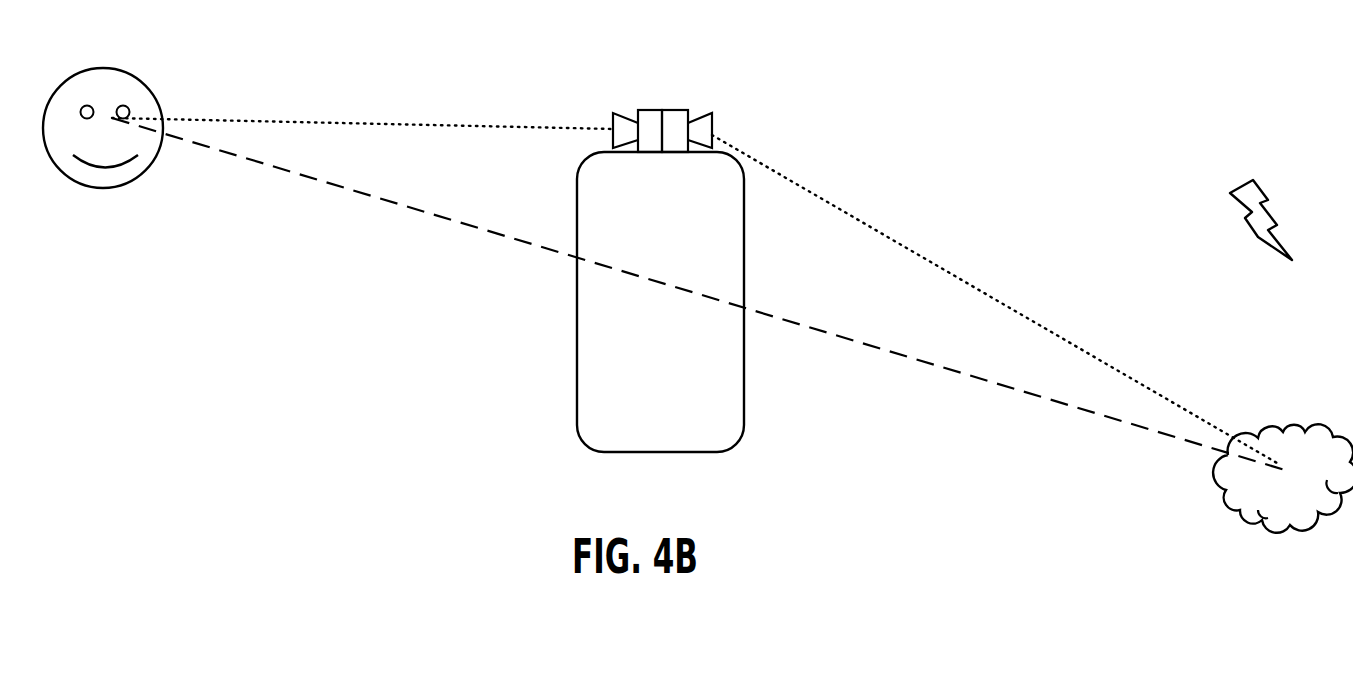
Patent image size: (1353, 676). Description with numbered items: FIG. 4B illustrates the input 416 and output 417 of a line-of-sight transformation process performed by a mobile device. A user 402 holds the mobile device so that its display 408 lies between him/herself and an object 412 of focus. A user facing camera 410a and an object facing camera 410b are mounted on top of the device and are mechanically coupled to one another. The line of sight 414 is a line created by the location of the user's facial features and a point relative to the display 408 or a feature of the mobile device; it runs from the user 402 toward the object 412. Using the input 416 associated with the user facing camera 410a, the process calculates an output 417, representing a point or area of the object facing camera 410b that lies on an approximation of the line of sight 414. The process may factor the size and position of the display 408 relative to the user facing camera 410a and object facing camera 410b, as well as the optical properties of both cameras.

The user 402 is at (80, 187).
The display 408 is at (632, 447).
The user facing camera 410a is at (648, 115).
The object facing camera 410b is at (680, 115).
The object 412 is at (1260, 510).
The line of sight 414 is at (353, 190).
The input 416 is at (353, 122).
The output 417 is at (982, 288).